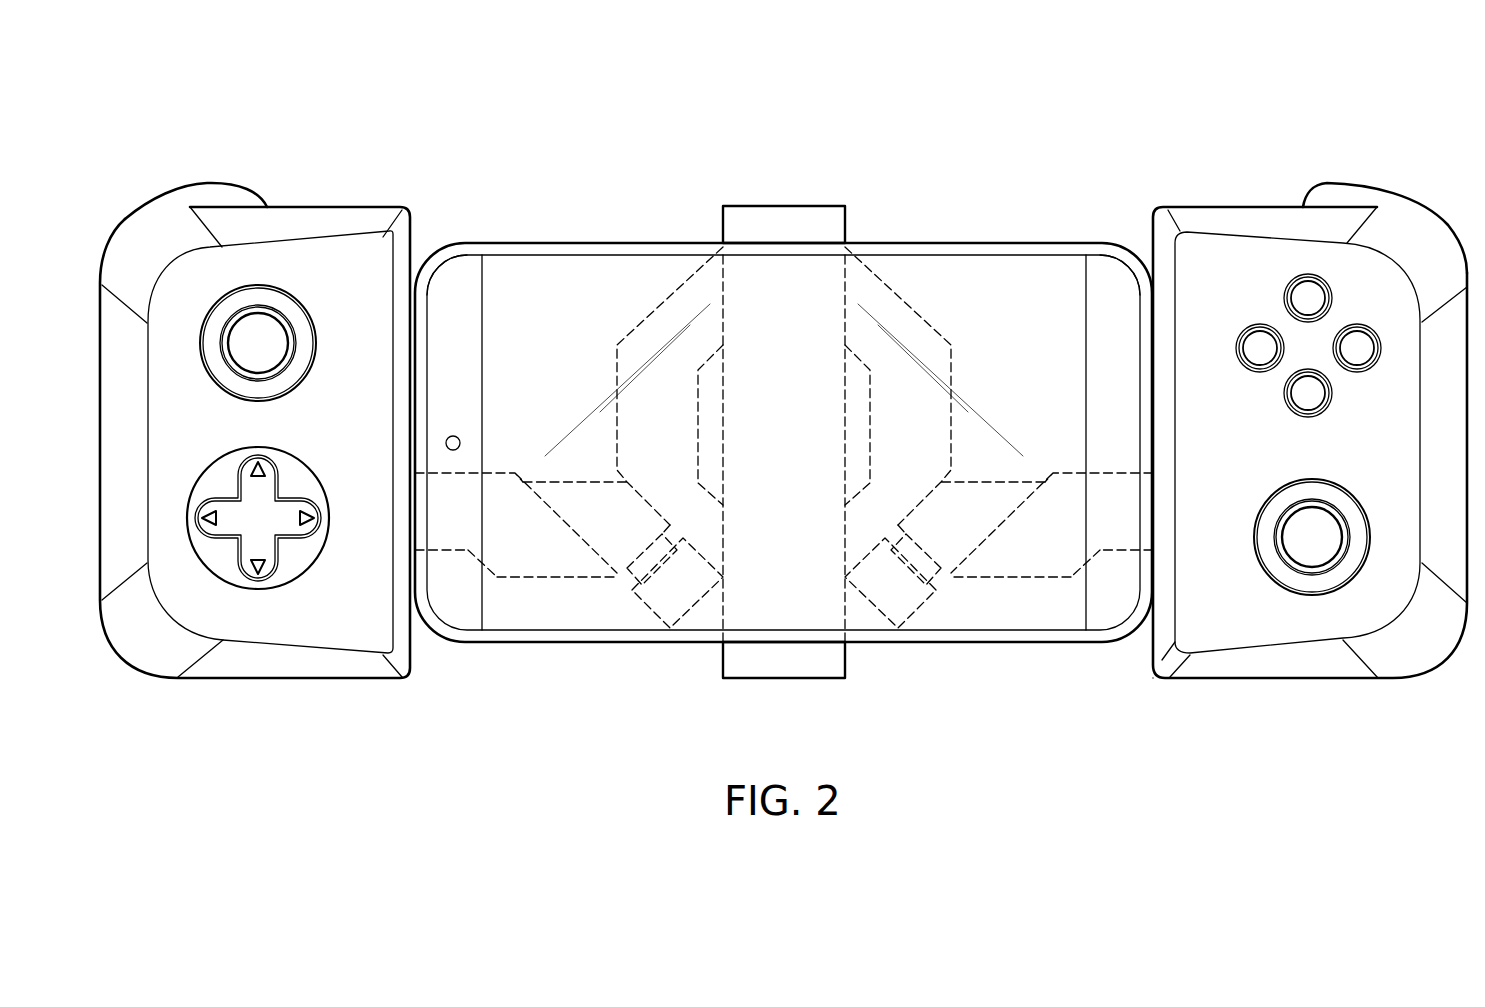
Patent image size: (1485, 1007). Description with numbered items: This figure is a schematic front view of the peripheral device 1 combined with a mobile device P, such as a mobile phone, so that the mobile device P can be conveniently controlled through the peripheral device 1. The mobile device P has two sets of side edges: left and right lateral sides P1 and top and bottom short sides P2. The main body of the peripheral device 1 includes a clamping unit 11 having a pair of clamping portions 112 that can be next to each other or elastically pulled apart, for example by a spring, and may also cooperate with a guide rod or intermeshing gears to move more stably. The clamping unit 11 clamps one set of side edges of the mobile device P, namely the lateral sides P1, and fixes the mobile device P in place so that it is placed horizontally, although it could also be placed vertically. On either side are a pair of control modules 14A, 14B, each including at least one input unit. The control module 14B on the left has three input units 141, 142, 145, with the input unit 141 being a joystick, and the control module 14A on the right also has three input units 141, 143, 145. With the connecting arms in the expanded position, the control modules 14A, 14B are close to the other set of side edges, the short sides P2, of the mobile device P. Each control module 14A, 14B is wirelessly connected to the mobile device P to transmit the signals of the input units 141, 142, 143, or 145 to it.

The peripheral device 1 is at (1431, 174).
The clamping unit 11 is at (820, 212).
The clamping portions 112 is at (767, 220).
The control module 14A is at (1240, 215).
The control module 14B is at (348, 215).
The input unit 141 is at (287, 380).
The input unit 142 is at (240, 483).
The input unit 143 is at (1260, 352).
The input unit 145 is at (242, 197).
The mobile device P is at (1019, 247).
The lateral sides P1 is at (948, 243).
The short sides P2 is at (417, 303).